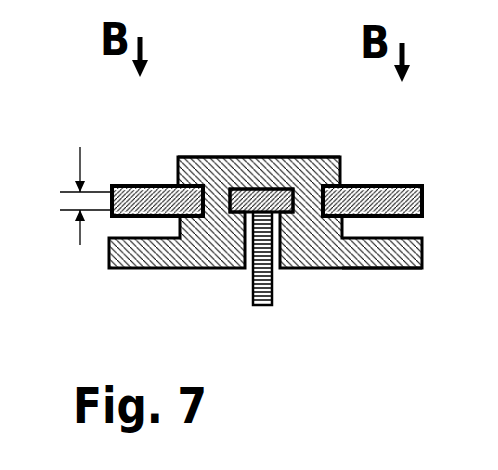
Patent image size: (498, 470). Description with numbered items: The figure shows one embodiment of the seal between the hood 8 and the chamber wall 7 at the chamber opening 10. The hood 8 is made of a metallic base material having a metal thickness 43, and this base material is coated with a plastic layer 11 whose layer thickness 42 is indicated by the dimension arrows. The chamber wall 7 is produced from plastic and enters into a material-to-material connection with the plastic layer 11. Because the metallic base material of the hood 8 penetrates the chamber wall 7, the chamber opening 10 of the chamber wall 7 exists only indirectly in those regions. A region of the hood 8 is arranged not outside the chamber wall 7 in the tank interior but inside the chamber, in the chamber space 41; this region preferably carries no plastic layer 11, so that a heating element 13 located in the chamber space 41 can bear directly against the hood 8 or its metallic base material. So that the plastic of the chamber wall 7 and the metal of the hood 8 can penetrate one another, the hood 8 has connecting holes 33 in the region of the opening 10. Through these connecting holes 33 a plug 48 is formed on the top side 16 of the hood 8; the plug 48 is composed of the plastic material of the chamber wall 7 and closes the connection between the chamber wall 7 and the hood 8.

The chamber wall 7 is at (255, 157).
The hood 8 is at (426, 200).
The chamber opening 10 is at (293, 207).
The plastic layer 11 is at (393, 186).
The heating element 13 is at (272, 294).
The top side 16 is at (208, 84).
The connecting holes 33 is at (206, 212).
The chamber space 41 is at (396, 295).
The layer thickness 42 is at (138, 227).
The metal thickness 43 is at (80, 162).
The plug 48 is at (278, 157).